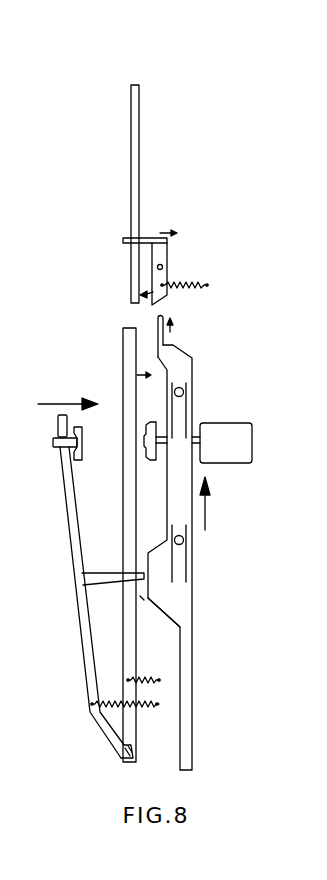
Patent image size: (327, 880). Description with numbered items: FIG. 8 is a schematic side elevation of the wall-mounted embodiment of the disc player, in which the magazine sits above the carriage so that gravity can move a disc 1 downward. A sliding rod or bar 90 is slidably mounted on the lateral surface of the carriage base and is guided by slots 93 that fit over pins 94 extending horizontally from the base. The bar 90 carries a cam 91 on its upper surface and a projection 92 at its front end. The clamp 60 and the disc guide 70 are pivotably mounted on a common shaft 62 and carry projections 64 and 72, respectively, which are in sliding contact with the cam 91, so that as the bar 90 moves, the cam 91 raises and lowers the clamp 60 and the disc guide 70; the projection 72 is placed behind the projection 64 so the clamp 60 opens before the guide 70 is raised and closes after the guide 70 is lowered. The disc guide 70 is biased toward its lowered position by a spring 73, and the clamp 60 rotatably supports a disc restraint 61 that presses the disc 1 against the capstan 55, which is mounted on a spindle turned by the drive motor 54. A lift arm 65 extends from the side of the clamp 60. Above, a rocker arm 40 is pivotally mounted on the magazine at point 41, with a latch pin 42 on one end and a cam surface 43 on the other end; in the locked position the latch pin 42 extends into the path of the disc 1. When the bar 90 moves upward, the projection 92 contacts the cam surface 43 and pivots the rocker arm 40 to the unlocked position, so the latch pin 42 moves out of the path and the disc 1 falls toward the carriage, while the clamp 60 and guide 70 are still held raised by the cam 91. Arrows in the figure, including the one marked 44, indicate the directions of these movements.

The disc 1 is at (133, 122).
The rocker arm 40 is at (168, 249).
The pivot point 41 is at (163, 267).
The latch pin 42 is at (124, 240).
The cam surface 43 is at (162, 299).
The direction arrow 44 is at (150, 237).
The drive motor 54 is at (253, 440).
The capstan 55 is at (144, 451).
The clamp 60 is at (70, 523).
The disc restraint 61 is at (52, 444).
The shaft 62 is at (120, 756).
The projection 64 is at (123, 572).
The lift arm 65 is at (150, 708).
The disc guide 70 is at (124, 369).
The projection 72 is at (140, 598).
The spring 73 is at (158, 682).
The sliding bar 90 is at (186, 638).
The cam 91 is at (150, 589).
The projection 92 is at (157, 328).
The slots 93 is at (178, 415).
The pins 94 is at (185, 390).